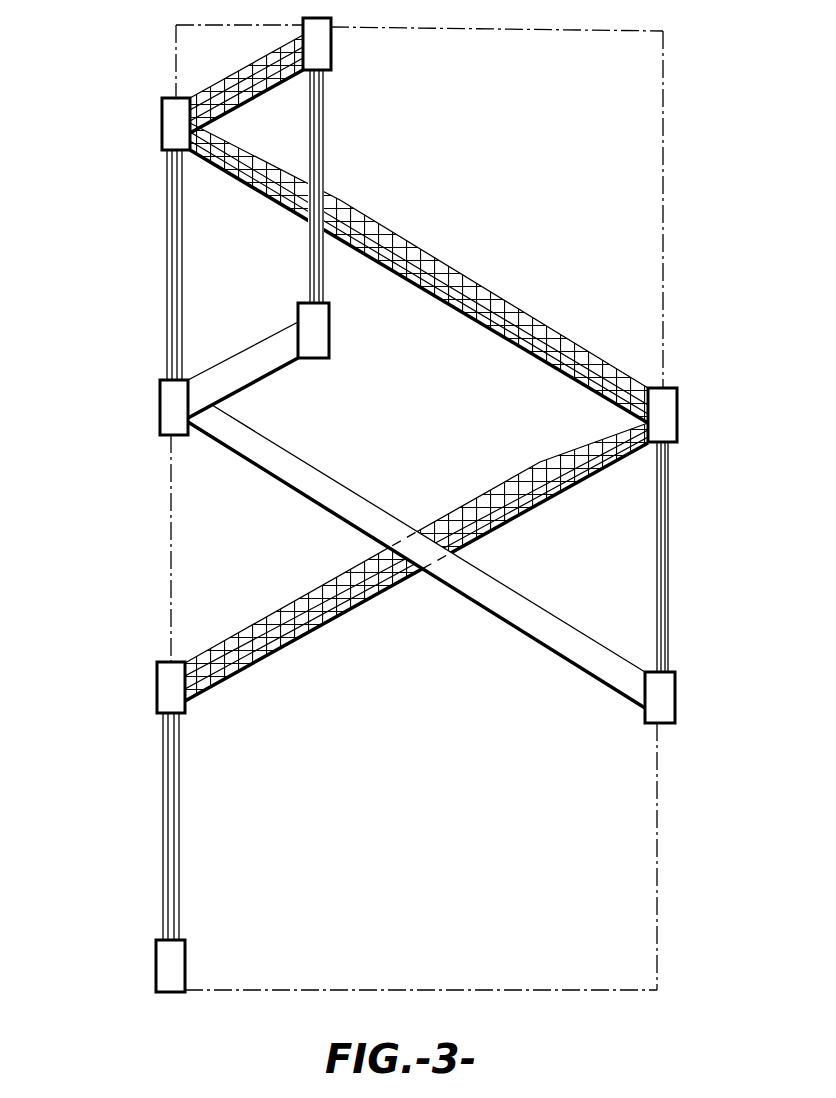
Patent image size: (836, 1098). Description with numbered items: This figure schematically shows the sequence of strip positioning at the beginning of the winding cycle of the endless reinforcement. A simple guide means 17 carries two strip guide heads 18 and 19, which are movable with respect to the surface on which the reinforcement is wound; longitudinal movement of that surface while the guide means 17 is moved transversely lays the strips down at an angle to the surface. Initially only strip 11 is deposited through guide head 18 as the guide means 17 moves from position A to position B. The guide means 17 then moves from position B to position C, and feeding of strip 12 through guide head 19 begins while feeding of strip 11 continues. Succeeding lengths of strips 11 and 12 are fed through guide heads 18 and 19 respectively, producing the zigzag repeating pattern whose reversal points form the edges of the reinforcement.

The strip 11 is at (245, 657).
The strip 12 is at (568, 655).
The guide means 17 is at (167, 222).
The strip guide head 18 is at (163, 104).
The strip guide head 19 is at (161, 412).
The position A is at (108, 838).
The position B is at (702, 510).
The position C is at (118, 268).